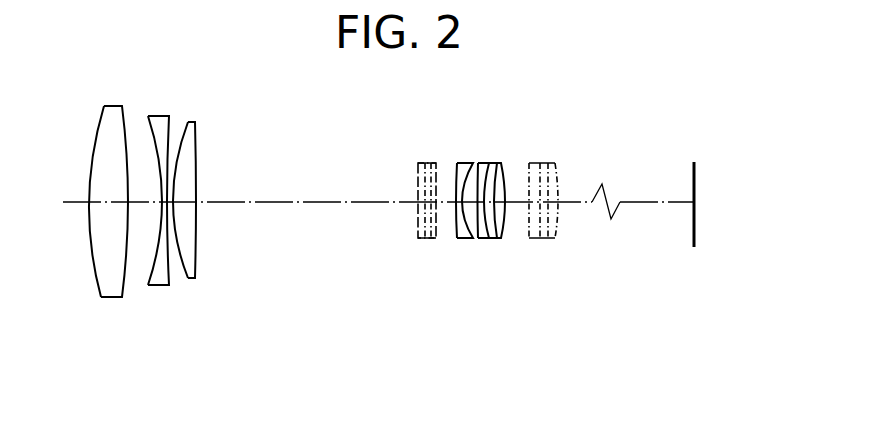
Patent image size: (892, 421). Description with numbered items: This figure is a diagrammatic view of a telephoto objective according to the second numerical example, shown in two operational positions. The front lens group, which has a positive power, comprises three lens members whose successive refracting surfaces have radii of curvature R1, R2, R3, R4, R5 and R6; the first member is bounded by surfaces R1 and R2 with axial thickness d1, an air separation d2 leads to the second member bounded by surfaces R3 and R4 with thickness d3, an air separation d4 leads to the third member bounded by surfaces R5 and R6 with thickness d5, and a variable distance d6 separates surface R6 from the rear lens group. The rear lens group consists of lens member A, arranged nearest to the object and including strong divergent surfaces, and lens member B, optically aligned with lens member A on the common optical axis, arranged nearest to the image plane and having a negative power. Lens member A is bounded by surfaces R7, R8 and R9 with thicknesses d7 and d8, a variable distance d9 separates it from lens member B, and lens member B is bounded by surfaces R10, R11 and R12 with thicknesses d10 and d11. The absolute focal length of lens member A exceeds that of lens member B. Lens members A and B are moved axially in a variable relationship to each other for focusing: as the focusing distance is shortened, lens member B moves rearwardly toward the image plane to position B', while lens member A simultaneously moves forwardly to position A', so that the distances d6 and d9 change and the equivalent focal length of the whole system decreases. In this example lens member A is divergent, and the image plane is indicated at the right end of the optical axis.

The first refracting surface radius R1 is at (103, 297).
The second refracting surface radius R2 is at (122, 298).
The third refracting surface radius R3 is at (148, 286).
The fourth refracting surface radius R4 is at (170, 286).
The fifth refracting surface radius R5 is at (188, 279).
The sixth refracting surface radius R6 is at (196, 279).
The seventh refracting surface radius R7 is at (457, 239).
The eighth refracting surface radius R8 is at (471, 239).
The ninth refracting surface radius R9 is at (478, 239).
The tenth refracting surface radius R10 is at (486, 239).
The eleventh refracting surface radius R11 is at (494, 239).
The twelfth refracting surface radius R12 is at (500, 239).
The first axial distance d1 is at (108, 189).
The second axial distance d2 is at (142, 192).
The third axial distance d3 is at (166, 205).
The fourth axial distance d4 is at (168, 192).
The fifth axial distance d5 is at (186, 190).
The sixth axial distance d6 is at (285, 190).
The seventh axial distance d7 is at (461, 200).
The eighth axial distance d8 is at (472, 200).
The ninth axial distance d9 is at (482, 200).
The tenth axial distance d10 is at (489, 200).
The eleventh axial distance d11 is at (497, 203).
The displaced position of lens member A A' is at (423, 163).
The lens member A is at (436, 193).
The lens member B is at (505, 193).
The displaced position of lens member B B' is at (541, 163).